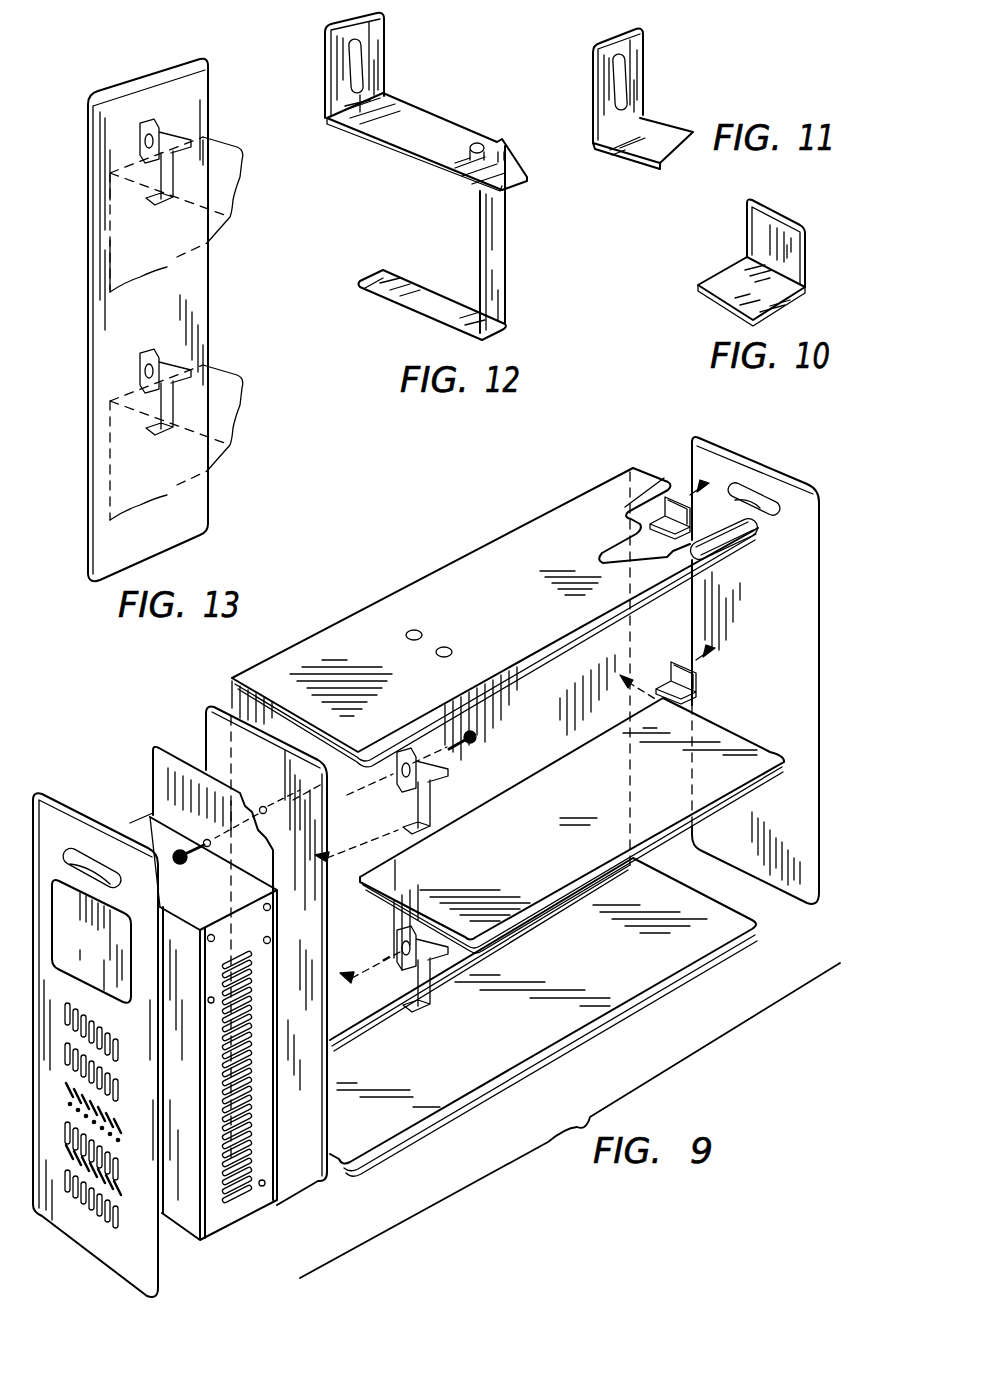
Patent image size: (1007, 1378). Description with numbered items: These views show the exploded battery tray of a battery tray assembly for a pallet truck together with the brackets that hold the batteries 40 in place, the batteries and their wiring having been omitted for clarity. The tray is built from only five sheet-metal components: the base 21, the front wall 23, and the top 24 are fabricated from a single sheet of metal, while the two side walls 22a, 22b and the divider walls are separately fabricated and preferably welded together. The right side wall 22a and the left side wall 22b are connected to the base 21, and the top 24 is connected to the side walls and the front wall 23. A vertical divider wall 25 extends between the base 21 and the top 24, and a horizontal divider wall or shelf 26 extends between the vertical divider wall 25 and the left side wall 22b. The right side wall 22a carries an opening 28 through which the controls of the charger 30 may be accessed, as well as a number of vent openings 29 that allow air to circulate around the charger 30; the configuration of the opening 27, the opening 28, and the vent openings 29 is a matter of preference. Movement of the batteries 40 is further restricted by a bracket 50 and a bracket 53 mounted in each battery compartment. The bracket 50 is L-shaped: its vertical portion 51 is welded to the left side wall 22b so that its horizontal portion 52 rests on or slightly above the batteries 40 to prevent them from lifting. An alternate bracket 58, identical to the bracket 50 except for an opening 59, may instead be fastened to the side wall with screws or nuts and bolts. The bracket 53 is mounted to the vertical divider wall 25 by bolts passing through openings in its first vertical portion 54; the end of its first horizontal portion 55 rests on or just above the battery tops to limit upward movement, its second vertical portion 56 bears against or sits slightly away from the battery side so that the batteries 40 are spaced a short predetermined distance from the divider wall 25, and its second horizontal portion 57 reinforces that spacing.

In FIG. 9, the base 21 is at (540, 1038).
In FIG. 9, the right side wall 22a is at (93, 1012).
In FIG. 9, the left side wall 22b is at (791, 656).
In FIG. 9, the front wall 23 is at (618, 634).
In FIG. 9, the top 24 is at (456, 575).
In FIG. 13, the vertical divider wall 25 is at (200, 86).
In FIG. 9, the vertical divider wall 25 is at (210, 712).
In FIG. 9, the horizontal divider wall or shelf 26 is at (632, 823).
In FIG. 9, the opening 27 is at (757, 488).
In FIG. 9, the opening 28 is at (62, 930).
In FIG. 9, the vent openings 29 is at (117, 1230).
In FIG. 9, the charger 30 is at (217, 1220).
In FIG. 13, the batteries 40 is at (232, 186).
In FIG. 10, the bracket 50 is at (712, 266).
In FIG. 9, the bracket 50 is at (680, 497).
In FIG. 10, the vertical portion 51 is at (757, 228).
In FIG. 10, the horizontal portion 52 is at (735, 268).
In FIG. 13, the bracket 53 is at (165, 132).
In FIG. 12, the bracket 53 is at (449, 176).
In FIG. 9, the bracket 53 is at (437, 800).
In FIG. 12, the first vertical portion 54 is at (378, 46).
In FIG. 12, the first horizontal portion 55 is at (457, 130).
In FIG. 12, the second vertical portion 56 is at (498, 243).
In FIG. 12, the second horizontal portion 57 is at (426, 295).
In FIG. 11, the alternate bracket 58 is at (671, 99).
In FIG. 11, the opening 59 is at (622, 78).